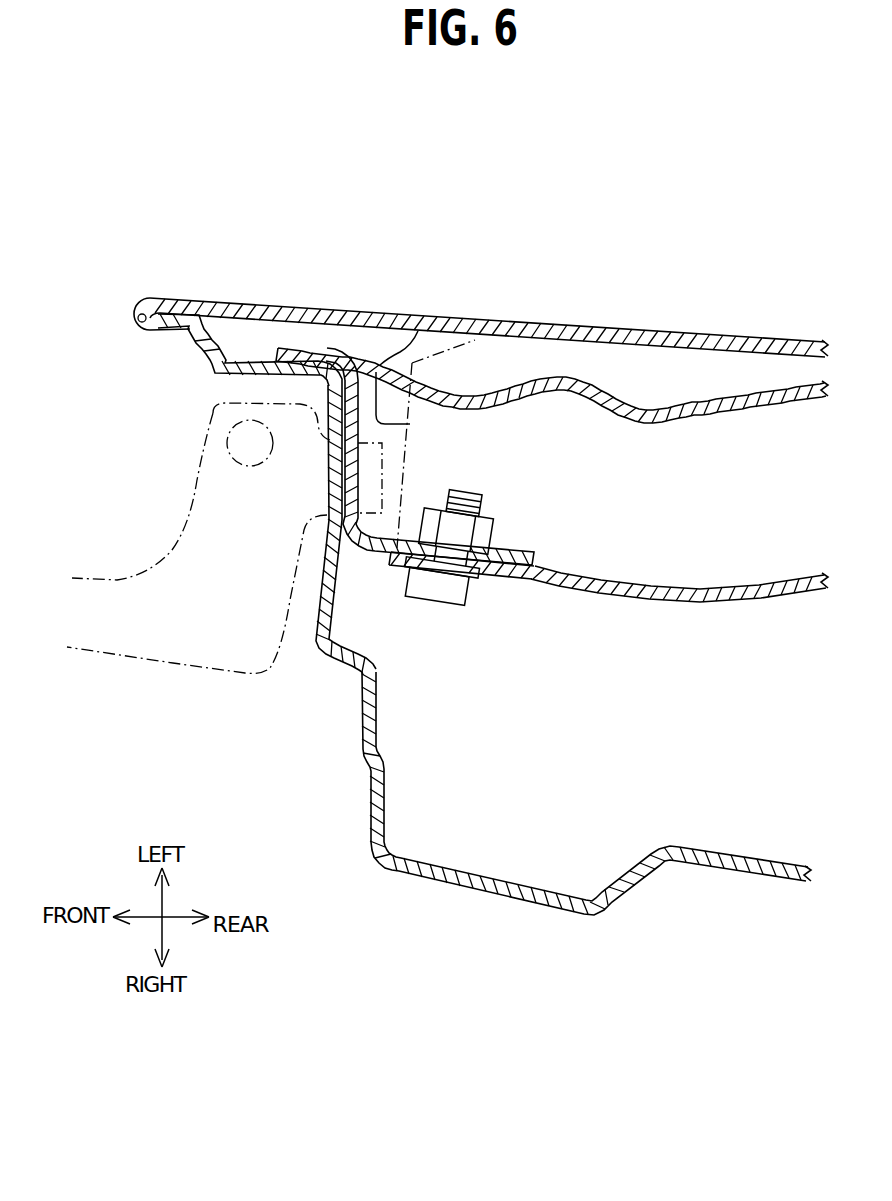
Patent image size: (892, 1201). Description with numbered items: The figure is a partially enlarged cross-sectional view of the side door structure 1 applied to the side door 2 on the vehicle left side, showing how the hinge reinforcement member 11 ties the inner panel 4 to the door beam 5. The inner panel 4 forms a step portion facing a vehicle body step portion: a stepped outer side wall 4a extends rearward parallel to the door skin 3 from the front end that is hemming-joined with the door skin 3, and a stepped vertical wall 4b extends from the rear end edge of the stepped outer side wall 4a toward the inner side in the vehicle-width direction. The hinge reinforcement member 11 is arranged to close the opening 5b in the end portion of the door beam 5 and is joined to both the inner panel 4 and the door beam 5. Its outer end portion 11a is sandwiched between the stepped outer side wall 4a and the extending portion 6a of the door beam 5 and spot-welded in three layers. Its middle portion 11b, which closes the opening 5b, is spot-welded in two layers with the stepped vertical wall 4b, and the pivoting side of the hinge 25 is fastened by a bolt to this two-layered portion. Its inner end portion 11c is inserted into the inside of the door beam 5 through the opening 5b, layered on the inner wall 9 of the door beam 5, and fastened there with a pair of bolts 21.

The side door structure 1 is at (187, 253).
The side door 2 is at (132, 312).
The door skin 3 is at (583, 333).
The inner panel 4 is at (364, 738).
The stepped outer side wall 4a is at (245, 373).
The stepped vertical wall 4b is at (331, 590).
The door beam 5 is at (703, 416).
The opening 5b is at (478, 335).
The extending portion 6a is at (333, 346).
The inner wall 9 is at (597, 594).
The hinge reinforcement member 11 is at (413, 455).
The outer end portion 11a is at (258, 358).
The middle portion 11b is at (418, 322).
The inner end portion 11c is at (518, 550).
The bolts 21 is at (444, 604).
The hinge 25 is at (143, 661).